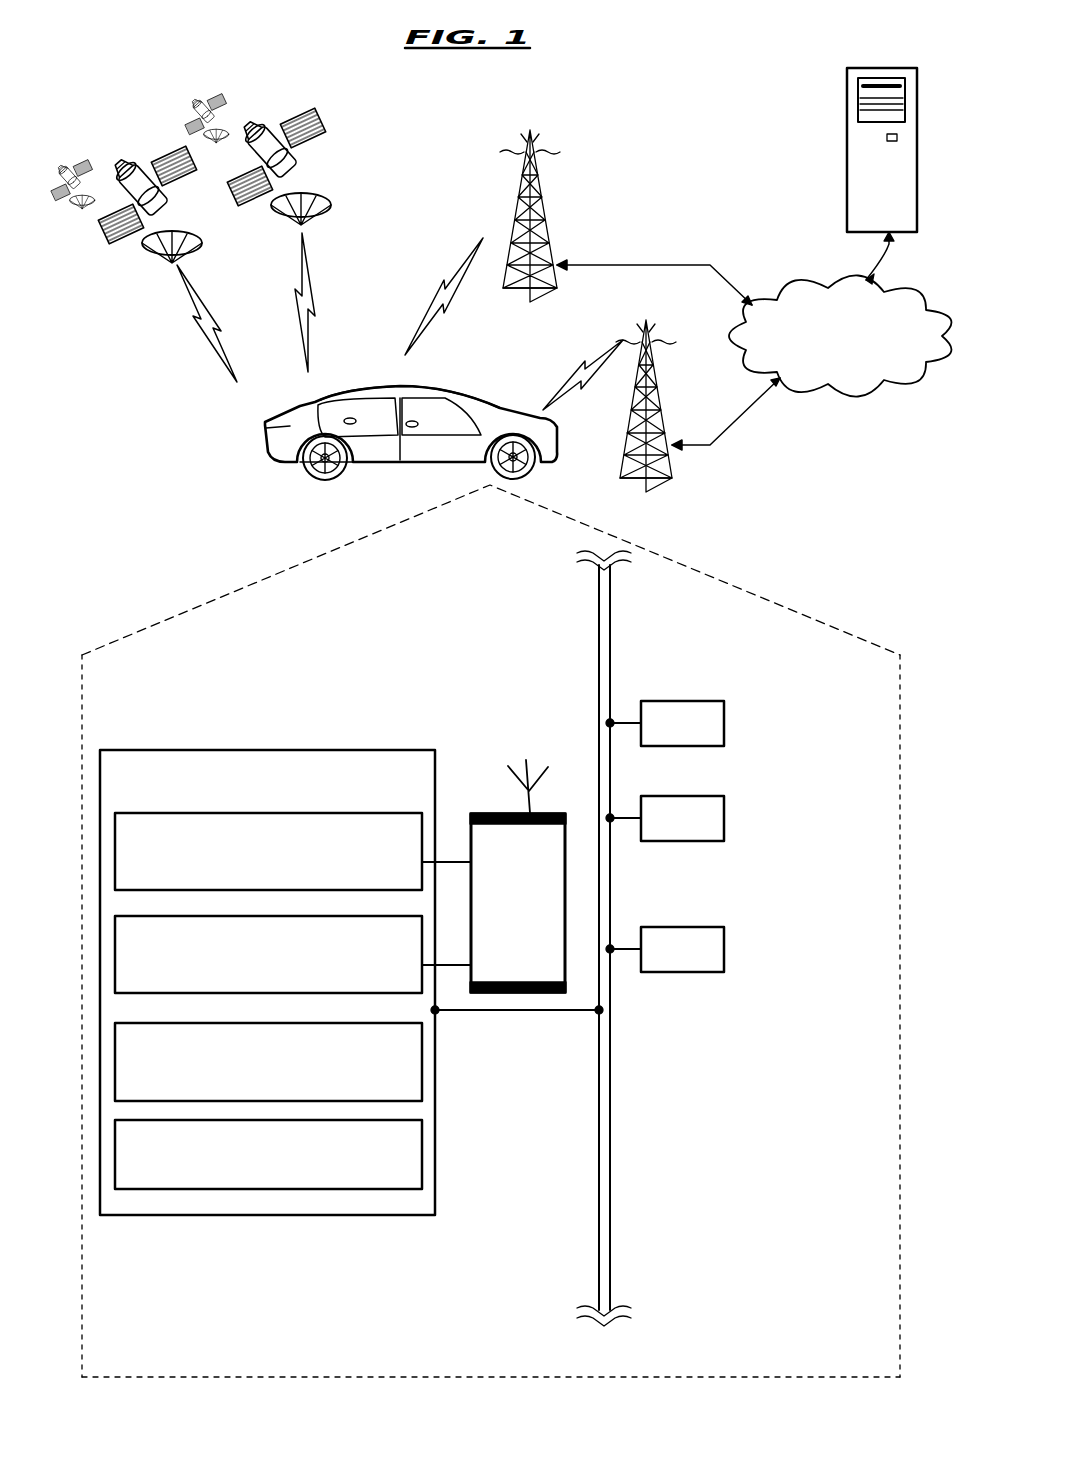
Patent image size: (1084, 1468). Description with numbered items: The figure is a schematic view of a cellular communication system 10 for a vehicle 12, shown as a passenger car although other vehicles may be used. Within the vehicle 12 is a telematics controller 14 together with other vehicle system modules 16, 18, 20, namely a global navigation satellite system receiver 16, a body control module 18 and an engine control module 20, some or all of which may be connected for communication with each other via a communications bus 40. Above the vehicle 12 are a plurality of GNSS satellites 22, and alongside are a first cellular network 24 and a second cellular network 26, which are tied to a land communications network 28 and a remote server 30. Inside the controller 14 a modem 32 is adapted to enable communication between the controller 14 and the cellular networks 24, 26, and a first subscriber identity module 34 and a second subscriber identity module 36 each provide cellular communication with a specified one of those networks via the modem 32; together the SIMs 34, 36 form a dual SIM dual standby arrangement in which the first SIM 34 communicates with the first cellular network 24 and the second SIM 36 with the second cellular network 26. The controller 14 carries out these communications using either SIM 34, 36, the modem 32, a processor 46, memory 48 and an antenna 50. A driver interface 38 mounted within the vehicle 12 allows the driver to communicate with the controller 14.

The cellular communication system 10 is at (748, 45).
The vehicle 12 is at (387, 383).
The telematics controller 14 is at (148, 750).
The global navigation satellite system receiver 16 is at (724, 723).
The body control module 18 is at (724, 818).
The engine control module 20 is at (724, 949).
The global navigation satellite system satellites 22 is at (252, 93).
The first cellular network 24 is at (538, 191).
The second cellular network 26 is at (655, 382).
The land communications network 28 is at (928, 348).
The remote server 30 is at (917, 185).
The modem 32 is at (531, 894).
The first subscriber identity module 34 is at (282, 866).
The second subscriber identity module 36 is at (282, 967).
The driver interface 38 is at (428, 385).
The communications bus 40 is at (599, 1237).
The processor 46 is at (282, 1077).
The memory 48 is at (282, 1169).
The antenna 50 is at (517, 757).